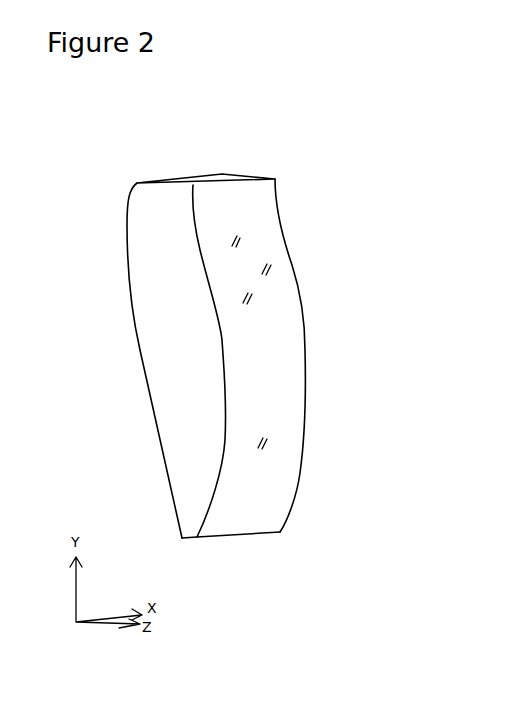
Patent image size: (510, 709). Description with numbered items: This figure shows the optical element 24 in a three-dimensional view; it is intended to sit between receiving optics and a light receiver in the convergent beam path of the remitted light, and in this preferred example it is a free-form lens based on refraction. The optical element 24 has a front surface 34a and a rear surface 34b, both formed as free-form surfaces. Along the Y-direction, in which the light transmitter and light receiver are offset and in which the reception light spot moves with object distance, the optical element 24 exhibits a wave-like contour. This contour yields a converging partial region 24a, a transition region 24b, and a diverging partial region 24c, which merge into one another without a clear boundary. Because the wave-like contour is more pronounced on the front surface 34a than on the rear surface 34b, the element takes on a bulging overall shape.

The optical element 24 is at (217, 308).
The converging partial region 24a is at (283, 490).
The transition region 24b is at (302, 318).
The diverging partial region 24c is at (265, 248).
The front surface 34a is at (262, 362).
The rear surface 34b is at (112, 327).